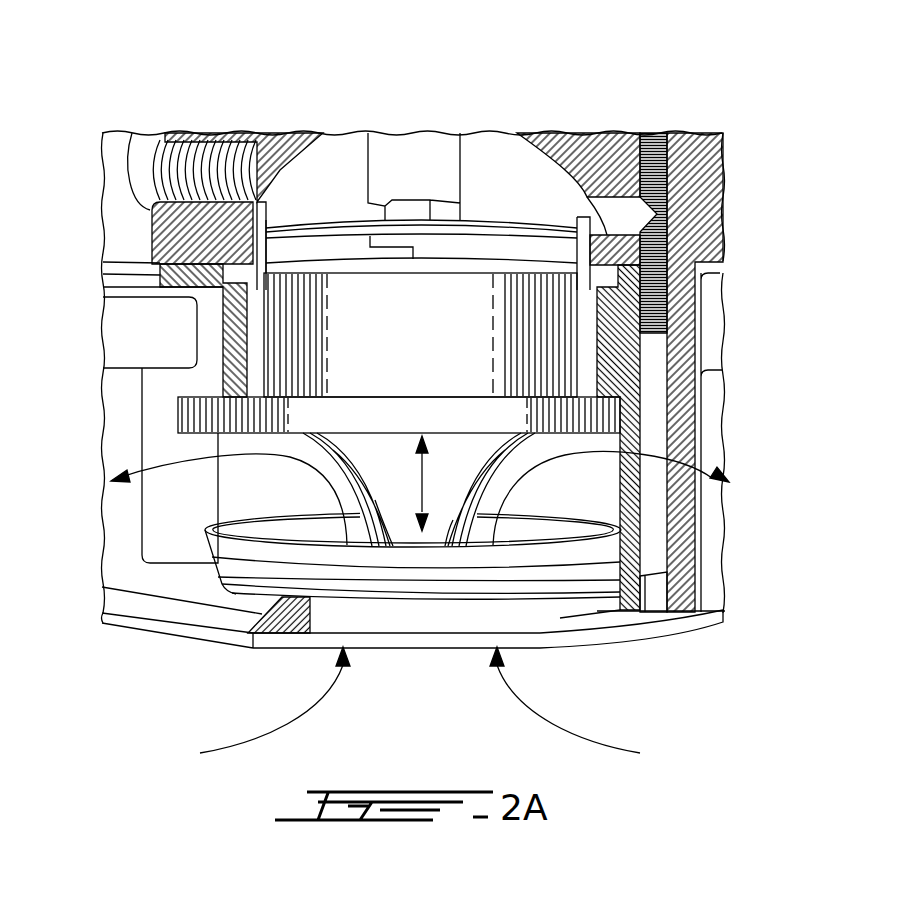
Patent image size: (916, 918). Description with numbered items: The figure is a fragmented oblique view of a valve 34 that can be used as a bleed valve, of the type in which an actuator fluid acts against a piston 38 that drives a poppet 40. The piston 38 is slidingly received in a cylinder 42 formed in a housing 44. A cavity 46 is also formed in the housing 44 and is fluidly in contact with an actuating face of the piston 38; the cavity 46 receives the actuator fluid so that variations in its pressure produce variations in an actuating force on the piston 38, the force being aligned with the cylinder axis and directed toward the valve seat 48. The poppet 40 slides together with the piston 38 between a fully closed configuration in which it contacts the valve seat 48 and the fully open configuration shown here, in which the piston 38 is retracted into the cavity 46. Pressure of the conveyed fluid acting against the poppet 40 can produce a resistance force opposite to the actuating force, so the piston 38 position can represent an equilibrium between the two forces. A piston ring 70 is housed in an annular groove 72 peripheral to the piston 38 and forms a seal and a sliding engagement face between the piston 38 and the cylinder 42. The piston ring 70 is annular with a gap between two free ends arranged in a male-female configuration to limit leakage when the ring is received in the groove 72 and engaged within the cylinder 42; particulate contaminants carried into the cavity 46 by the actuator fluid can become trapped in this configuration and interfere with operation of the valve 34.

The valve 34 is at (738, 163).
The piston 38 is at (478, 327).
The poppet 40 is at (452, 473).
The cylinder 42 is at (578, 366).
The housing 44 is at (692, 240).
The cavity 46 is at (493, 180).
The valve seat 48 is at (586, 530).
The piston ring 70 is at (273, 252).
The annular groove 72 is at (297, 232).